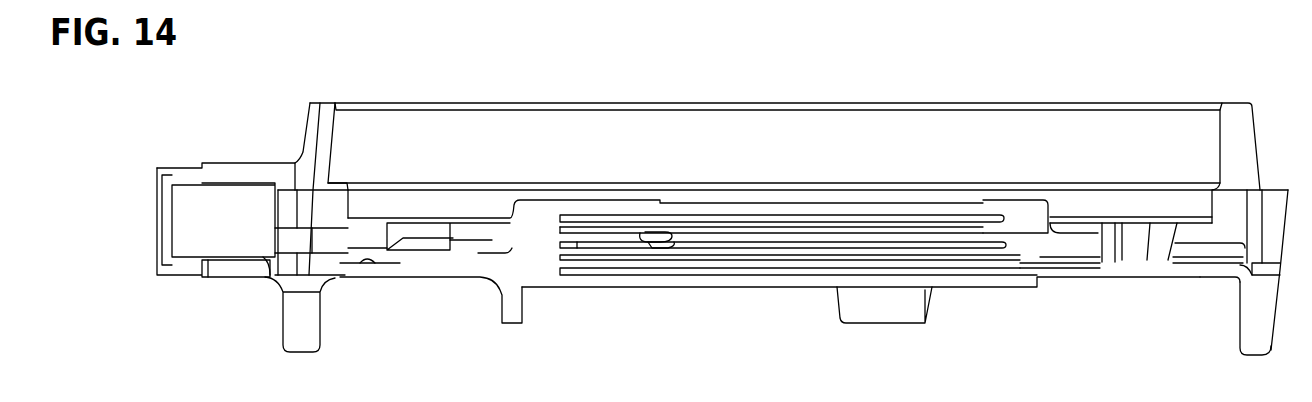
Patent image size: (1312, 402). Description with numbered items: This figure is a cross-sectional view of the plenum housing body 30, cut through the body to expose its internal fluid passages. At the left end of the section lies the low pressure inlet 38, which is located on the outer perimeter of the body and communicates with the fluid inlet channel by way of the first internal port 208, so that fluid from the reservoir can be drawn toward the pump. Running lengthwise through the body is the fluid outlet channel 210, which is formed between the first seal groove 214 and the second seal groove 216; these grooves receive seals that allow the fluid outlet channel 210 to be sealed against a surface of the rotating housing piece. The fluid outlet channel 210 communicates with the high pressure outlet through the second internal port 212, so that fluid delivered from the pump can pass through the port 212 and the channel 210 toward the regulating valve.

The plenum housing body 30 is at (212, 143).
The low pressure inlet 38 is at (188, 265).
The first internal port 208 is at (325, 240).
The second internal port 212 is at (652, 245).
The first seal groove 214 is at (943, 223).
The fluid outlet channel 210 is at (987, 243).
The second seal groove 216 is at (972, 262).